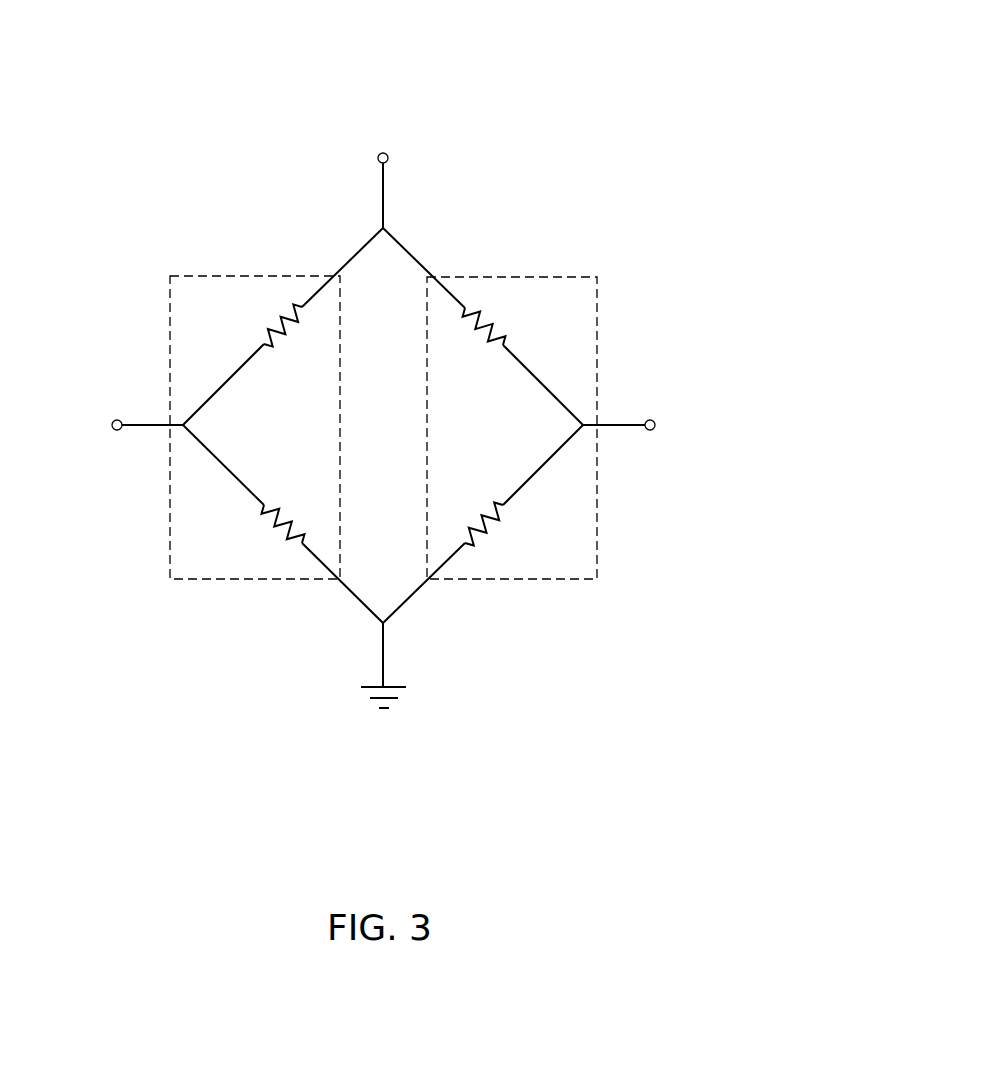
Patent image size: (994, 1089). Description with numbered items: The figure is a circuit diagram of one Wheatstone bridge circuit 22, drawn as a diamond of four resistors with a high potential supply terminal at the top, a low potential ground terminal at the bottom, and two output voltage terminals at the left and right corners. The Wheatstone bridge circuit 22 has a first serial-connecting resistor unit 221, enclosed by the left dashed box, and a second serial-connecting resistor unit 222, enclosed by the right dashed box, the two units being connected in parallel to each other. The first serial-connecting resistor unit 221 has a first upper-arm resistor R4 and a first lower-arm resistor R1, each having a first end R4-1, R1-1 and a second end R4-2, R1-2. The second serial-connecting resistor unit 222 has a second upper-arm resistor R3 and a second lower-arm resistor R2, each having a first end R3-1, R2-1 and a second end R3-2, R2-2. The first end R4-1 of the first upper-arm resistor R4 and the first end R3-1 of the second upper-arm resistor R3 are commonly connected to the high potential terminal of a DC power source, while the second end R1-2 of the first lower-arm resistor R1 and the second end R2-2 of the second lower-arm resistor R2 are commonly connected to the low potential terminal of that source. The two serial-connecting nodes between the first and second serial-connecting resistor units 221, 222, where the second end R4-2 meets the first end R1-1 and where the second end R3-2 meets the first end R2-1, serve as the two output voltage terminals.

The Wheatstone bridge circuit 22 is at (604, 98).
The first serial-connecting resistor unit 221 is at (222, 276).
The second serial-connecting resistor unit 222 is at (553, 277).
The first lower-arm resistor R1 is at (274, 532).
The second lower-arm resistor R2 is at (500, 532).
The second upper-arm resistor R3 is at (499, 319).
The first upper-arm resistor R4 is at (272, 318).
The first end of the first lower-arm resistor R1-1 is at (265, 505).
The second end of the first lower-arm resistor R1-2 is at (302, 545).
The first end of the second lower-arm resistor R2-1 is at (505, 507).
The second end of the second lower-arm resistor R2-2 is at (466, 545).
The first end of the second upper-arm resistor R3-1 is at (463, 304).
The second end of the second upper-arm resistor R3-2 is at (505, 343).
The first end of the first upper-arm resistor R4-1 is at (303, 305).
The second end of the first upper-arm resistor R4-2 is at (265, 341).